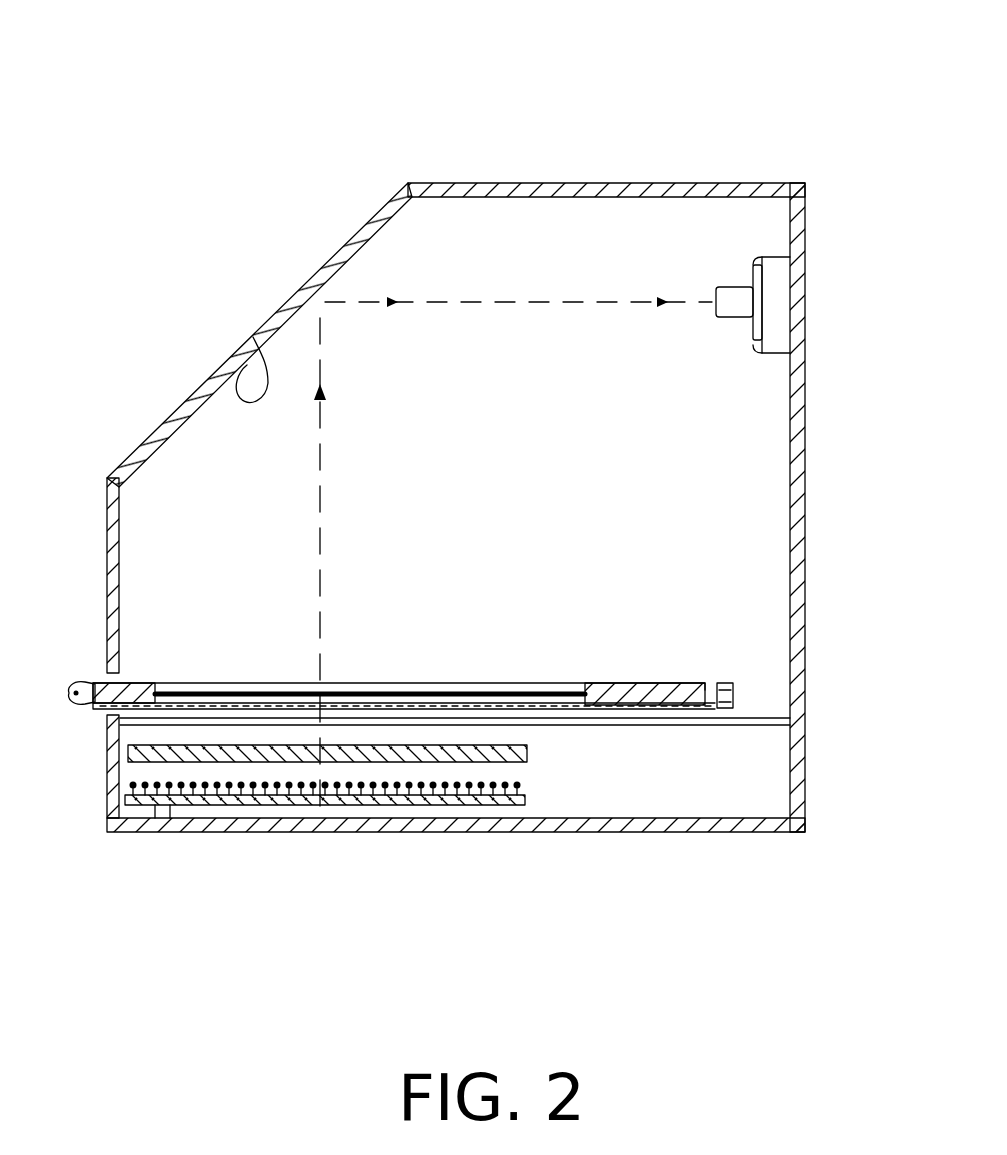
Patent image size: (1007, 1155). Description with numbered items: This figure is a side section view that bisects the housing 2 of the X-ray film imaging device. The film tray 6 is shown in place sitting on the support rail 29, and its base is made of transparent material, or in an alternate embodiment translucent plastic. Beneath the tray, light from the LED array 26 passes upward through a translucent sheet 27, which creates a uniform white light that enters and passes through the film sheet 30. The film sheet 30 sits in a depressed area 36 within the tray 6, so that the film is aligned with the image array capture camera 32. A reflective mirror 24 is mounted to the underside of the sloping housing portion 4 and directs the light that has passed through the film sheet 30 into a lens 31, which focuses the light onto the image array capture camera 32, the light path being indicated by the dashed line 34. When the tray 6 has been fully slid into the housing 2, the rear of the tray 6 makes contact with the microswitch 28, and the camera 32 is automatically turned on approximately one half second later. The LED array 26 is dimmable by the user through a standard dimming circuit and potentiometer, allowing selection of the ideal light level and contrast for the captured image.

The housing 2 is at (777, 135).
The sloping housing portion 4 is at (390, 203).
The film tray 6 is at (100, 703).
The reflective mirror 24 is at (253, 337).
The LED array 26 is at (455, 805).
The translucent sheet 27 is at (527, 747).
The microswitch 28 is at (727, 708).
The support rail 29 is at (648, 725).
The film sheet 30 is at (553, 692).
The lens 31 is at (720, 287).
The image array capture camera 32 is at (757, 300).
The dashed line 34 is at (312, 535).
The depressed area 36 is at (507, 687).